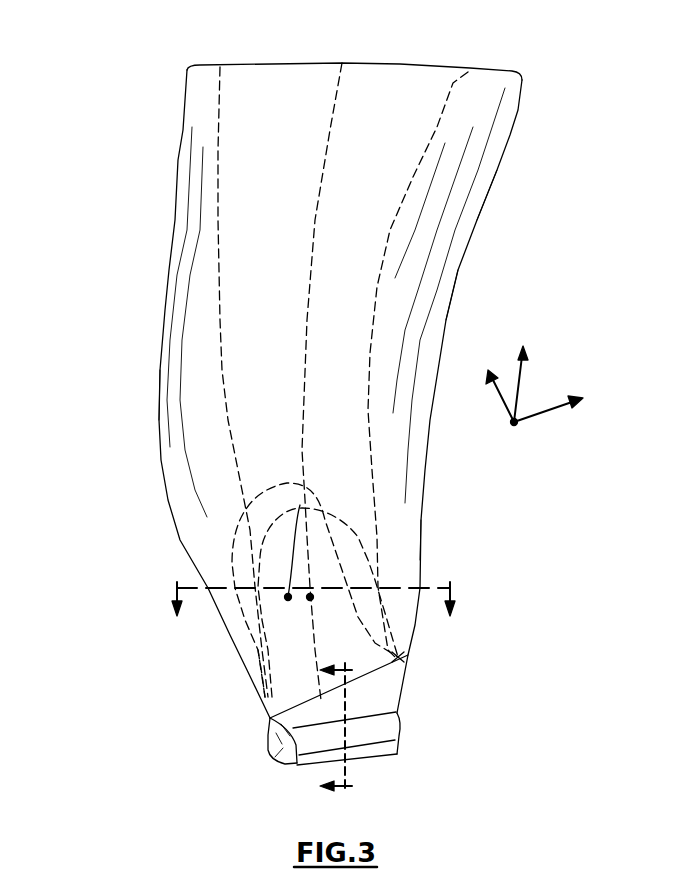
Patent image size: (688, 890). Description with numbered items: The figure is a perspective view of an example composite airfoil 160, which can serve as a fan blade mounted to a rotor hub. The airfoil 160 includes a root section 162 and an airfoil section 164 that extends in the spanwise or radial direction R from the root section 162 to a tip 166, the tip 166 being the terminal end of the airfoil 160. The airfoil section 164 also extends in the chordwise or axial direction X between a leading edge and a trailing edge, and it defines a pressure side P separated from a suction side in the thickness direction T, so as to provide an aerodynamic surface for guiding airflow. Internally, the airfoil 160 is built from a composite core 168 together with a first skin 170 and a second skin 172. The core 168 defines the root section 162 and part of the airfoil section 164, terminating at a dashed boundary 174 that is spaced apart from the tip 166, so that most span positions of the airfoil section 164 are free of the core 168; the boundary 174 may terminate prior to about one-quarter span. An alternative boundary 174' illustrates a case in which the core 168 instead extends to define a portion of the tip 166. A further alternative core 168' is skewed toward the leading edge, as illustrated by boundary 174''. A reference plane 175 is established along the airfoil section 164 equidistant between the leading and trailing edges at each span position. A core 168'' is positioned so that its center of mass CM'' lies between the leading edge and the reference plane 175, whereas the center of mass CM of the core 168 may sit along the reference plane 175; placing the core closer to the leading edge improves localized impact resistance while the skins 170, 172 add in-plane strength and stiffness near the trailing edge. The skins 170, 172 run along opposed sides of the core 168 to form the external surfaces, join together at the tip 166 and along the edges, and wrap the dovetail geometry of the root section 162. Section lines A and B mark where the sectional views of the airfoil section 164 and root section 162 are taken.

The composite airfoil 160 is at (155, 50).
The root section 162 is at (400, 727).
The airfoil section 164 is at (165, 310).
The tip 166 is at (343, 63).
The composite core 168 is at (245, 775).
The core 168' is at (452, 336).
The core 168'' is at (220, 673).
The first skin 170 is at (268, 738).
The second skin 172 is at (412, 517).
The boundary 174 is at (370, 602).
The boundary 174' is at (477, 272).
The boundary 174'' is at (315, 567).
The reference plane 175 is at (336, 98).
The center of mass CM is at (338, 632).
The center of mass CM'' is at (327, 542).
The pressure side P is at (488, 160).
The section line A- A is at (314, 618).
The section line B- B is at (324, 730).
The radial direction R is at (523, 376).
The thickness direction T is at (495, 383).
The axial direction X is at (559, 404).